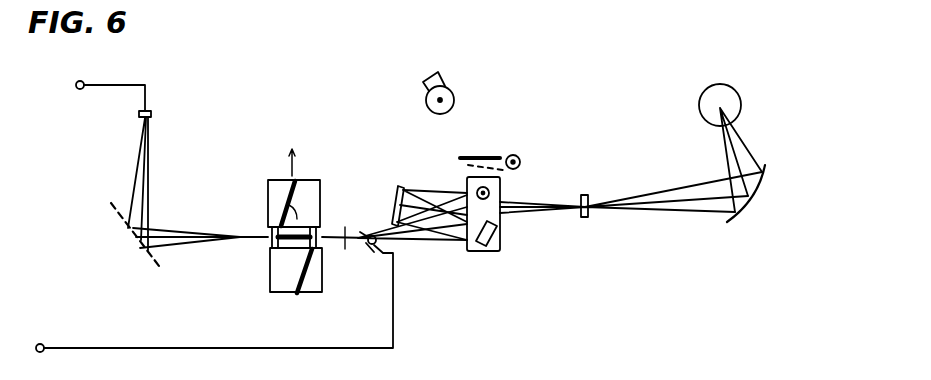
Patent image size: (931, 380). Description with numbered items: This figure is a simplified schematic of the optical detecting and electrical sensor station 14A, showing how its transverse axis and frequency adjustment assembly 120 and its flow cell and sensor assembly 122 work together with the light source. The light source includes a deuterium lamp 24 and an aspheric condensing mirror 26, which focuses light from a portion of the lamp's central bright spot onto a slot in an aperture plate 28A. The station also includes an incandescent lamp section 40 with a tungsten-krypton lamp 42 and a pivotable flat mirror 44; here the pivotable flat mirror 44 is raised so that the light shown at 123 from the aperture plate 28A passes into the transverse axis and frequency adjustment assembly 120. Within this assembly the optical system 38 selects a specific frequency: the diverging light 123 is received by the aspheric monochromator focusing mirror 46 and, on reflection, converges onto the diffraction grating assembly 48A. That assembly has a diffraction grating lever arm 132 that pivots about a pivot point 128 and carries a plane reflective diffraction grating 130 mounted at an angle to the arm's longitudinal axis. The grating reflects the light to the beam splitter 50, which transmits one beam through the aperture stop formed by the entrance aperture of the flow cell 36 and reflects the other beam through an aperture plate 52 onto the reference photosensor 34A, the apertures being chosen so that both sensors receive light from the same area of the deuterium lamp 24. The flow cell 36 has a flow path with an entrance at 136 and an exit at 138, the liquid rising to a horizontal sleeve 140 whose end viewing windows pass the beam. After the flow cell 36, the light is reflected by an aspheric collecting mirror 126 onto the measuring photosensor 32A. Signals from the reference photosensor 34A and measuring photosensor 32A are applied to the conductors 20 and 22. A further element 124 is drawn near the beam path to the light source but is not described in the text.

The optical detecting and electrical sensor station 14A is at (365, 54).
The conductor 20 is at (128, 82).
The conductor 22 is at (136, 347).
The deuterium lamp 24 is at (715, 78).
The aspheric condensing mirror 26 is at (768, 178).
The aperture plate 28A is at (590, 196).
The measuring photosensor 32A is at (152, 114).
The reference photosensor 34A is at (373, 252).
The flow cell 36 is at (305, 290).
The optical system 38 is at (398, 180).
The incandescent lamp section 40 is at (548, 144).
The tungsten-krypton lamp 42 is at (455, 97).
The pivotable flat mirror 44 is at (477, 159).
The aspheric monochromator focusing mirror 46 is at (394, 201).
The diffraction grating assembly 48A is at (480, 258).
The beam splitter 50 is at (345, 225).
The aperture plate 52 is at (355, 238).
The transverse axis and frequency adjustment assembly 120 is at (439, 56).
The flow cell and sensor assembly 122 is at (233, 89).
The light 123 is at (521, 206).
The aperture plate 124 is at (588, 215).
The aspheric collecting mirror 126 is at (140, 269).
The pivot point 128 is at (468, 190).
The plane reflective diffraction grating 130 is at (500, 235).
The diffraction grating lever arm 132 is at (500, 249).
The entrance 136 is at (296, 295).
The exit 138 is at (297, 180).
The horizontal sleeve 140 is at (285, 215).